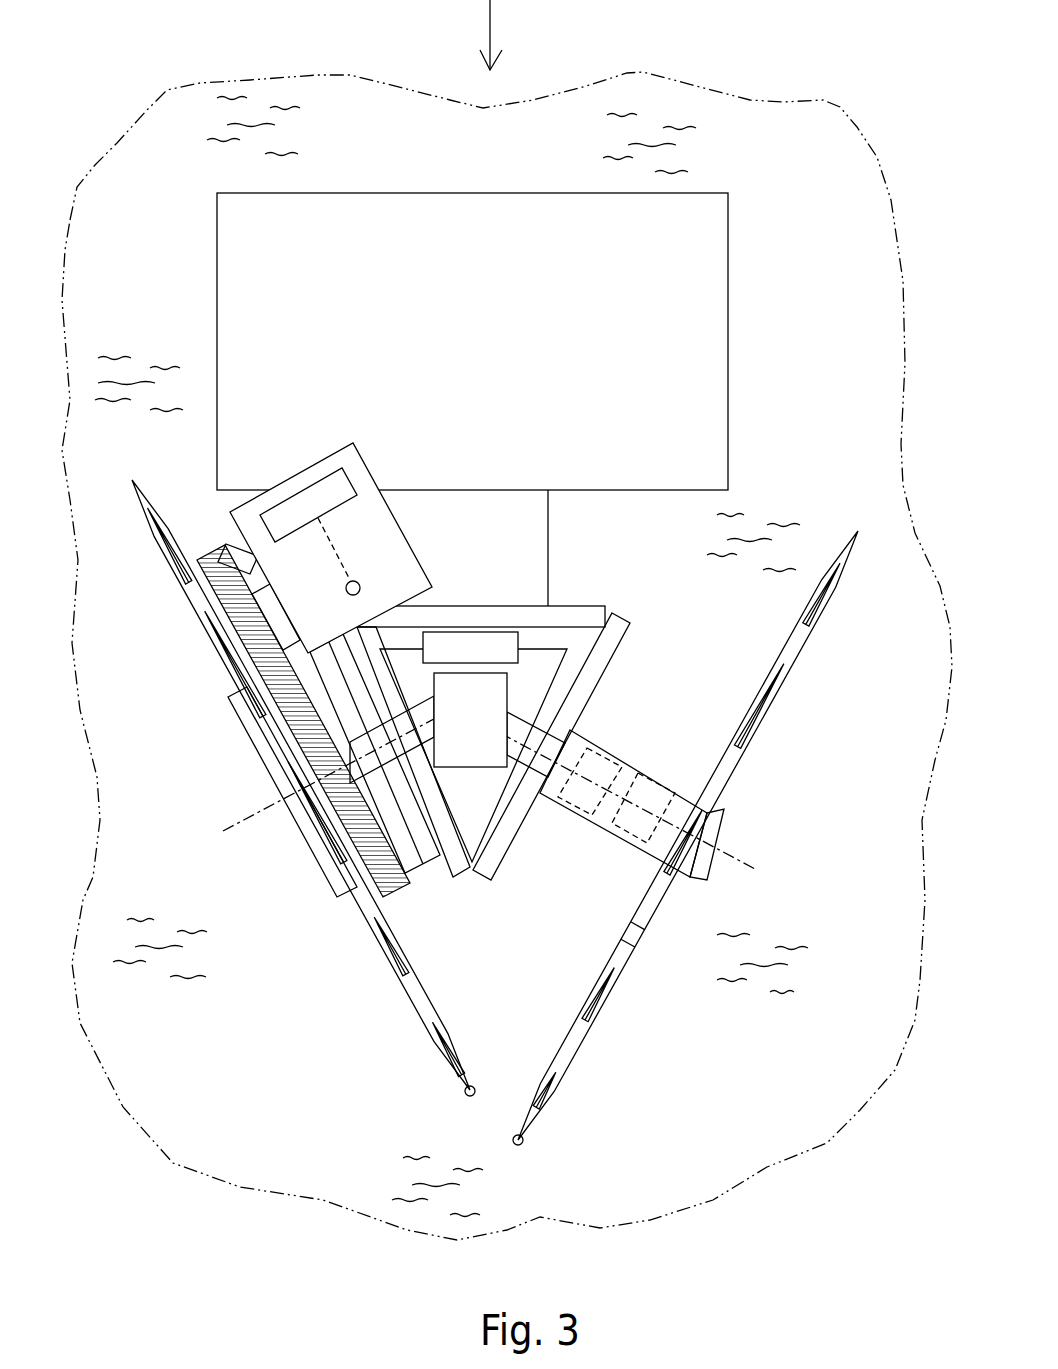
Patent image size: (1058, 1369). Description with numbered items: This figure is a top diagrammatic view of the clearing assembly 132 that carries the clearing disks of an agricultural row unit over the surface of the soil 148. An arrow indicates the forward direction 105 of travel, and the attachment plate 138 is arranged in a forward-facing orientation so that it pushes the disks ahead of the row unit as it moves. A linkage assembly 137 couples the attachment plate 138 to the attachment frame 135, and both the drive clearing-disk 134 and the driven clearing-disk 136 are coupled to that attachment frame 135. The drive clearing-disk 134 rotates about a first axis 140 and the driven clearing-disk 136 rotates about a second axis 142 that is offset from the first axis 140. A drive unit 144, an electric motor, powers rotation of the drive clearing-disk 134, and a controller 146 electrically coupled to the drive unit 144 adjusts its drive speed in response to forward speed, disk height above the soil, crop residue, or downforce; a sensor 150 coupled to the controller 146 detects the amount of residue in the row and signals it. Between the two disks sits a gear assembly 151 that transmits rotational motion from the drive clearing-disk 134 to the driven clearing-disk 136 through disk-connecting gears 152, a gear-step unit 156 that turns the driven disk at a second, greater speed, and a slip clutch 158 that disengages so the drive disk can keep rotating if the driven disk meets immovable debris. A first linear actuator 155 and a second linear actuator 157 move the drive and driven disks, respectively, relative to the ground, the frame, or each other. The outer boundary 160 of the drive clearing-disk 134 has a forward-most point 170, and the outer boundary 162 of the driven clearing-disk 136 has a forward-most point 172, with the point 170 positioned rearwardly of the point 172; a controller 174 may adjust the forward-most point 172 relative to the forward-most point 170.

The forward direction 105 is at (487, 14).
The clearing assembly 132 is at (822, 124).
The drive clearing-disk 134 is at (382, 953).
The attachment frame 135 is at (567, 612).
The driven clearing-disk 136 is at (600, 993).
The linkage assembly 137 is at (527, 527).
The attachment plate 138 is at (710, 318).
The first axis 140 is at (232, 828).
The second axis 142 is at (733, 860).
The drive unit 144 is at (233, 528).
The controller 146 is at (293, 495).
The surface of the soil 148 is at (140, 170).
The sensor 150 is at (358, 578).
The gear assembly 151 is at (635, 664).
The disk-connecting gears 152 is at (468, 748).
The first linear actuator 155 is at (358, 756).
The gear-step unit 156 is at (617, 752).
The second linear actuator 157 is at (542, 785).
The slip clutch 158 is at (652, 820).
The outer boundary of the drive clearing-disk 160 is at (172, 555).
The outer boundary of the driven clearing-disk 162 is at (822, 600).
The forward-most point of the drive clearing-disk 170 is at (467, 1096).
The forward-most point of the driven clearing-disk 172 is at (523, 1145).
The controller 174 is at (470, 642).